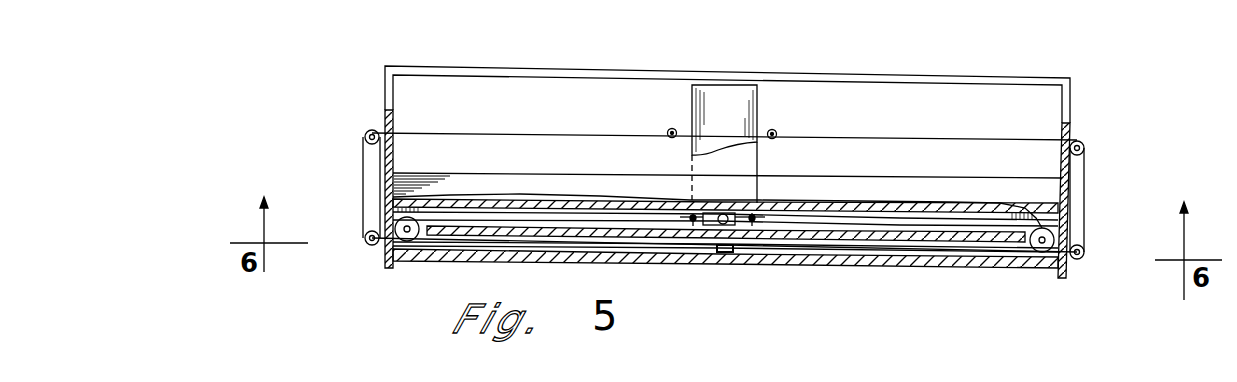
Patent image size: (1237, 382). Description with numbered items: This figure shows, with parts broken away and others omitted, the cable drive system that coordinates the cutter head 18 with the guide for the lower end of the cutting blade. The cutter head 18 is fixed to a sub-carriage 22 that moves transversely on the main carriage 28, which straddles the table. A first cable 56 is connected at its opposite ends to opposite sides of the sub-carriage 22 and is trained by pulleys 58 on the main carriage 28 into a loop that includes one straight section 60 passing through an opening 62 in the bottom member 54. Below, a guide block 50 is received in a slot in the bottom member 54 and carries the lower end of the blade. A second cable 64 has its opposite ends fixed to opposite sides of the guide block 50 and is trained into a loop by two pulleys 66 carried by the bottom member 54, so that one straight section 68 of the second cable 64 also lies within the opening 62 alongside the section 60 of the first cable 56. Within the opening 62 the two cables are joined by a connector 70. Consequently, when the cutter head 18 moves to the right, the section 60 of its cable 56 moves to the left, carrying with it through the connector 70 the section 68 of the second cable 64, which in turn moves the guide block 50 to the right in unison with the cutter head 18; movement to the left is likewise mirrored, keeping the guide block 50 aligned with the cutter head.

The main carriage 28 is at (440, 66).
The sub-carriage 22 is at (725, 117).
The first cable 56 is at (899, 138).
The cutter head 18 is at (757, 193).
The pulleys 58 is at (365, 137).
The second cable 64 is at (880, 218).
The guide block 50 is at (748, 228).
The straight section 68 is at (968, 242).
The pulleys 66 is at (1042, 230).
The opening 62 is at (880, 253).
The straight section 60 is at (1002, 255).
The connector 70 is at (728, 255).
The bottom member 54 is at (456, 262).